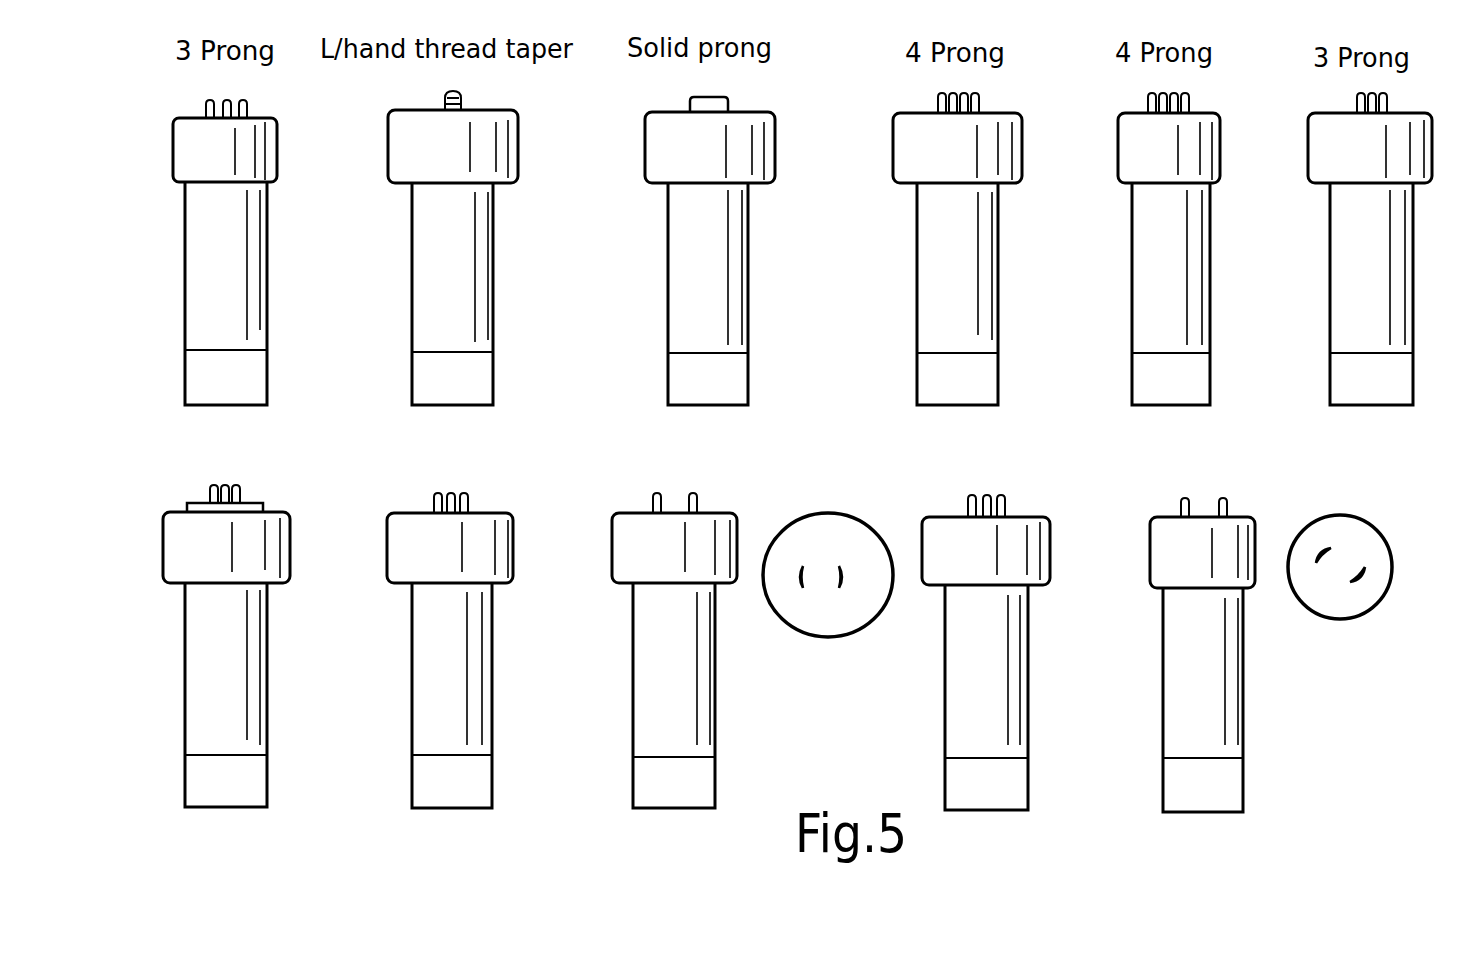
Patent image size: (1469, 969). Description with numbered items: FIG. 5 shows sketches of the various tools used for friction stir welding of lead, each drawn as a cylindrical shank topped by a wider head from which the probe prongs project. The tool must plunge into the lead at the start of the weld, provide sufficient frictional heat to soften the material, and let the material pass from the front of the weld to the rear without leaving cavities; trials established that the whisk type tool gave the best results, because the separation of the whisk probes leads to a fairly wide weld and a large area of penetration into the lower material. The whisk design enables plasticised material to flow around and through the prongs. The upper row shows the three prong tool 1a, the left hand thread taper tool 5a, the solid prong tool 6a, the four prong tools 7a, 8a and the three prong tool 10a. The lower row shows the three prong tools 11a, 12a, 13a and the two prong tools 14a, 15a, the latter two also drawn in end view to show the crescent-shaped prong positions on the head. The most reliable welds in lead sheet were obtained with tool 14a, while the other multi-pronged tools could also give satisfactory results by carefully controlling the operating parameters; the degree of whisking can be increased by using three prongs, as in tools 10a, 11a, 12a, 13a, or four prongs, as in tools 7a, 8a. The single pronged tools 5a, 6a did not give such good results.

The three prong tool 1a is at (240, 255).
The left hand thread taper tool 5a is at (462, 251).
The solid prong tool 6a is at (717, 254).
The four prong tool 7a is at (966, 252).
The four prong tool 8a is at (1185, 252).
The three prong tool 10a is at (1387, 252).
The three prong tool 11a is at (244, 649).
The three prong tool 12a is at (469, 653).
The three prong tool 13a is at (1004, 652).
The two prong tool 14a is at (690, 650).
The two prong tool 15a is at (1225, 655).